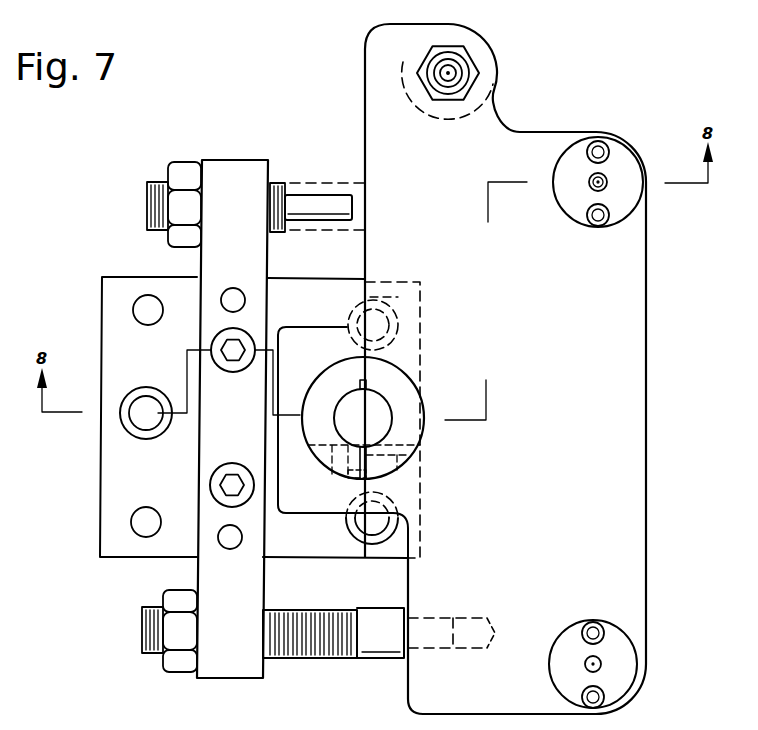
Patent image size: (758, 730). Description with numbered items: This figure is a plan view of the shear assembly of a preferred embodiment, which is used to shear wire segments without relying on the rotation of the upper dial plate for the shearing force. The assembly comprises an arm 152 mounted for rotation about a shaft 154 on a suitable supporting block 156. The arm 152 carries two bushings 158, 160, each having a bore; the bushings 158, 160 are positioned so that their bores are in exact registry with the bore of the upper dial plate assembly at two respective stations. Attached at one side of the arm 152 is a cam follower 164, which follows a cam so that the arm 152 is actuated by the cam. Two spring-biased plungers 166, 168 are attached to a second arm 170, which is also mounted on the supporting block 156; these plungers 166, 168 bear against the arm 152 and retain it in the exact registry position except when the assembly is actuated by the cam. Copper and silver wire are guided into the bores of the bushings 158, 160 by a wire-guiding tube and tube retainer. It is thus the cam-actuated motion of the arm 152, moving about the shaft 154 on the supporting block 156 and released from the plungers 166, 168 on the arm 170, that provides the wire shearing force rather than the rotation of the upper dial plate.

The arm 152 is at (646, 489).
The shaft 154 is at (390, 428).
The supporting block 156 is at (101, 283).
The bushing 158 is at (605, 188).
The bushing 160 is at (601, 666).
The cam follower 164 is at (402, 52).
The spring-biased plunger 166 is at (318, 183).
The spring-biased plunger 168 is at (291, 659).
The arm 170 is at (223, 680).